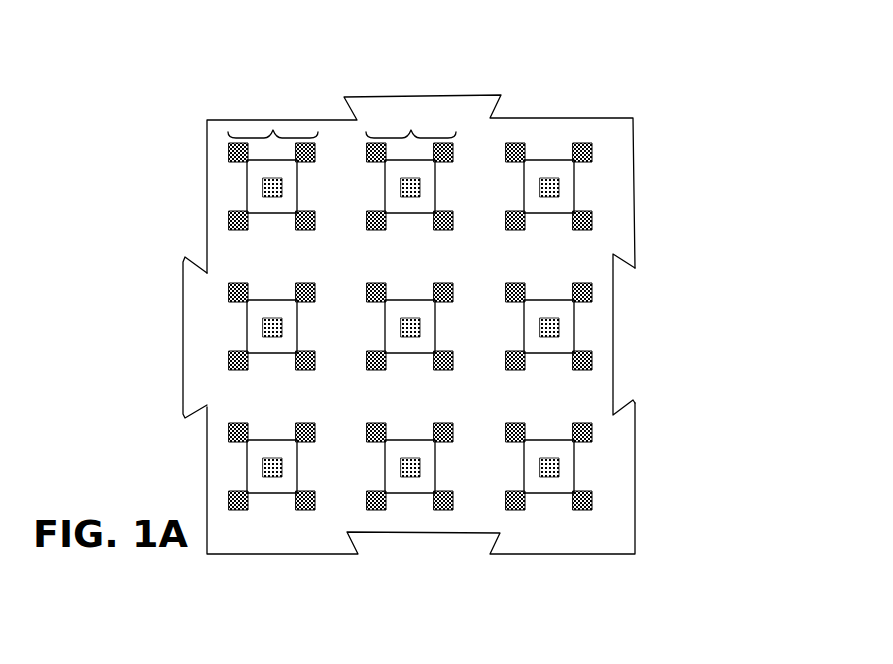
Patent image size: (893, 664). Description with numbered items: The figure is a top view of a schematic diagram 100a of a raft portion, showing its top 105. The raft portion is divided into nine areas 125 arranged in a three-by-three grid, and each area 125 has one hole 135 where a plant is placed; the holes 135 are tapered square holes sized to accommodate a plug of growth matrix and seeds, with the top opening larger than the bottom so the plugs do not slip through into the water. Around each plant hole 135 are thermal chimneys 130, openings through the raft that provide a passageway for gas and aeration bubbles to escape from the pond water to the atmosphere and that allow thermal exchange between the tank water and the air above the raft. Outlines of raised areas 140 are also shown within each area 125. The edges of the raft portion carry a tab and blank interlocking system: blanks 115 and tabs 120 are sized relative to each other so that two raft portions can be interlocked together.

The schematic diagram 100a is at (727, 534).
The top 105 is at (230, 562).
The blanks 115 is at (630, 328).
The tabs 120 is at (165, 340).
The areas 125 is at (411, 132).
The thermal chimneys 130 is at (220, 158).
The holes 135 is at (424, 172).
The raised areas 140 is at (405, 507).